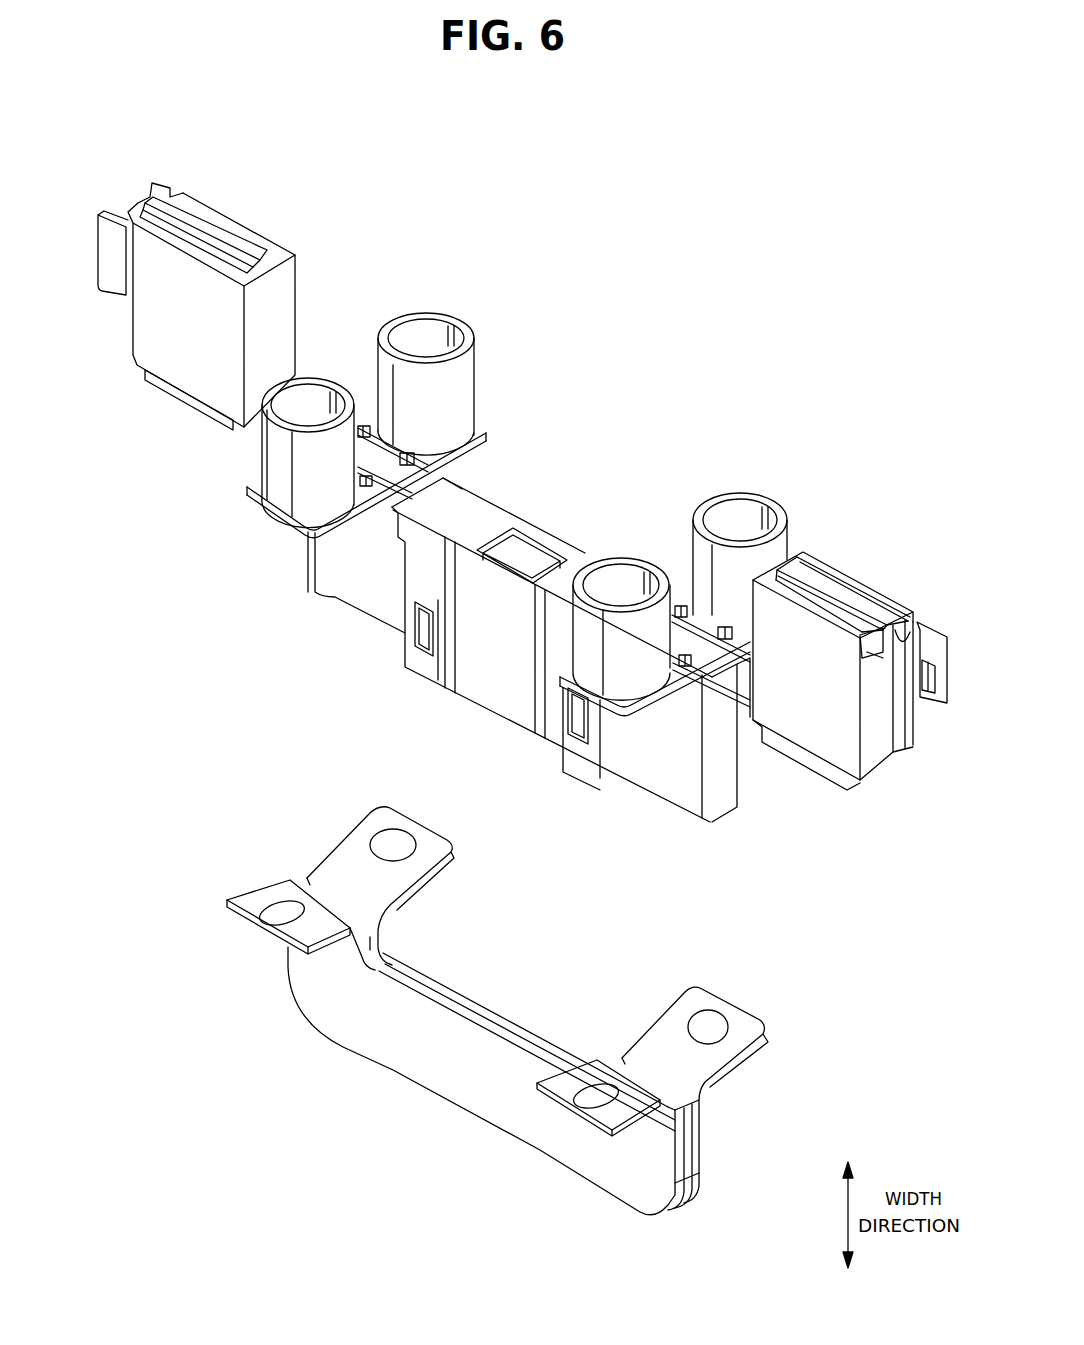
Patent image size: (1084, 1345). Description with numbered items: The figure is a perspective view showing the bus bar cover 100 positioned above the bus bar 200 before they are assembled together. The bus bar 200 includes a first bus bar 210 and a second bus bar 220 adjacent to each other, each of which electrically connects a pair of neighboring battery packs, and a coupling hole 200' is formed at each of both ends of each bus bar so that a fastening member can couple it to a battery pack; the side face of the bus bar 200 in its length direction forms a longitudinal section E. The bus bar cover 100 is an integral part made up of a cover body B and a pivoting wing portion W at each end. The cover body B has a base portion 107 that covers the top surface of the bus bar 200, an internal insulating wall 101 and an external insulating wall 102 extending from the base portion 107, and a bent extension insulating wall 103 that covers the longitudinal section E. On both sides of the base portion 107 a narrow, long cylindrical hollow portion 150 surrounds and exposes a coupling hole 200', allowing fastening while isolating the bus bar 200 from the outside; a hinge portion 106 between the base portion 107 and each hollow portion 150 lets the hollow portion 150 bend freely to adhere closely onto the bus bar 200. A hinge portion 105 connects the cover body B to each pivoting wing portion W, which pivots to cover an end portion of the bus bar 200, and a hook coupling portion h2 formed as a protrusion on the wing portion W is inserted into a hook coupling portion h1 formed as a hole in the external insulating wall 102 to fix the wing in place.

The bus bar cover 100 is at (150, 455).
The internal insulating wall 101 is at (527, 545).
The external insulating wall 102 is at (555, 535).
The extension insulating wall 103 is at (727, 800).
The hinge portion 105 is at (690, 660).
The hinge portion 106 is at (372, 432).
The base portion 107 is at (468, 505).
The hollow portion 150 is at (434, 348).
The bus bar 200 is at (440, 993).
The coupling hole 200' is at (537, 990).
The first bus bar 210 is at (440, 1085).
The second bus bar 220 is at (505, 1025).
The pivoting wing portion W is at (222, 185).
The cover body B is at (400, 693).
The longitudinal section E is at (700, 1150).
The hook coupling portion h1 is at (580, 718).
The hook coupling portion h2 is at (932, 692).